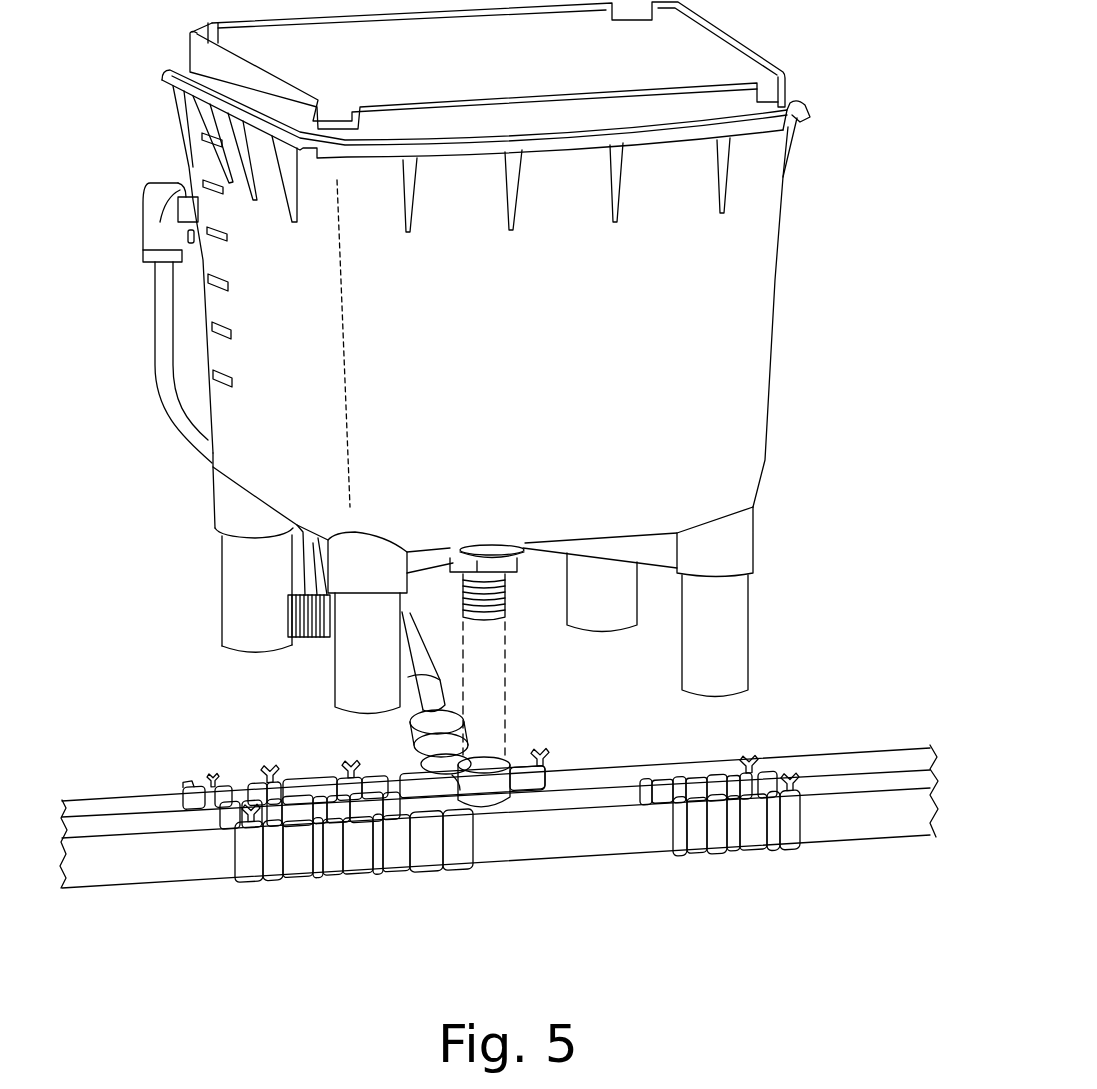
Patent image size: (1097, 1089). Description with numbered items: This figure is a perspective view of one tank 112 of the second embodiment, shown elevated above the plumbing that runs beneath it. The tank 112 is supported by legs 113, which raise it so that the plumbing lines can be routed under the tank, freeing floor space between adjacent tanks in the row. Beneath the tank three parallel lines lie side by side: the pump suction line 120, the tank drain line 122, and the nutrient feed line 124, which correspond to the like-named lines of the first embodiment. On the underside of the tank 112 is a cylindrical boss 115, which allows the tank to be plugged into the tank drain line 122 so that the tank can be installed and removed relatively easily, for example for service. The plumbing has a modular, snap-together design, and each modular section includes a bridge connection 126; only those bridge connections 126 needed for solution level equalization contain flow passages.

The tank 112 is at (778, 294).
The legs 113 is at (248, 603).
The cylindrical boss 115 is at (502, 588).
The pump suction line 120 is at (168, 876).
The tank drain line 122 is at (180, 826).
The nutrient feed line 124 is at (308, 784).
The bridge connection 126 is at (410, 823).